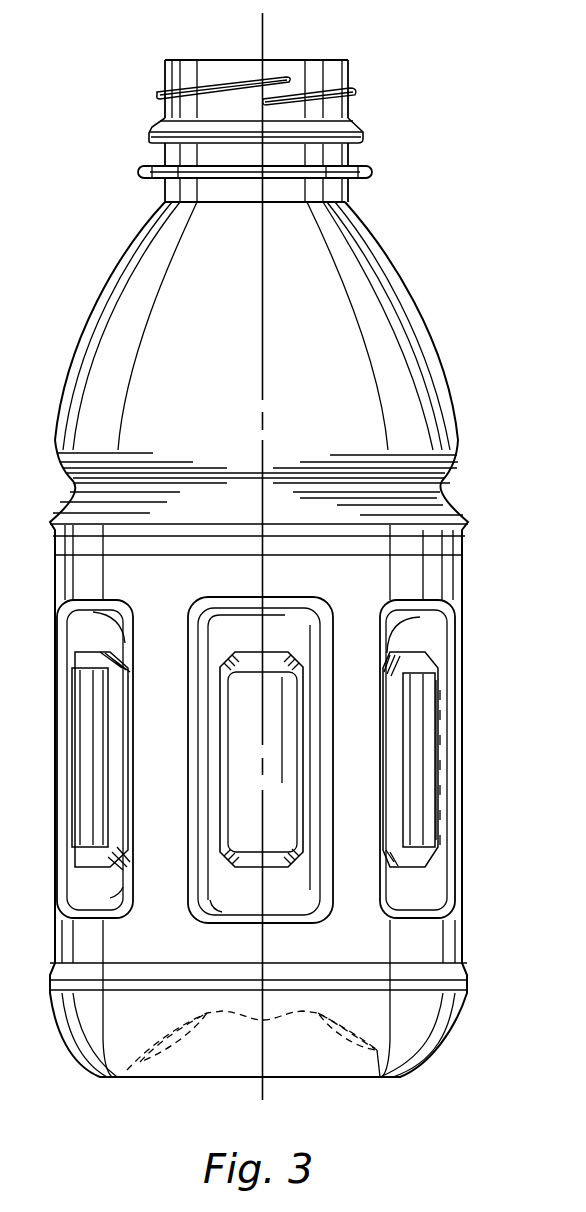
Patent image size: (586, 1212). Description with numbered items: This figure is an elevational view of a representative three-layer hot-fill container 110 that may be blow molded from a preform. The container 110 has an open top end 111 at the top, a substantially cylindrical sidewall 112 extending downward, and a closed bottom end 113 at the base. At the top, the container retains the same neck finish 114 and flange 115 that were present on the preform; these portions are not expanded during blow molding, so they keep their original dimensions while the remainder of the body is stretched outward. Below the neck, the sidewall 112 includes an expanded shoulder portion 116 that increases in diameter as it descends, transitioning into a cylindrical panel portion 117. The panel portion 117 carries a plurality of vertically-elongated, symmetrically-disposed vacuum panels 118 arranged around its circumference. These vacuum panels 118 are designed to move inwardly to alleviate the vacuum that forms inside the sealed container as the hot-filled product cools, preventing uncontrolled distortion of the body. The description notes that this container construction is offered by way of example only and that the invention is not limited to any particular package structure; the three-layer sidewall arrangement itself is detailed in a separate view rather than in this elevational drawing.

The container 110 is at (463, 264).
The open top end 111 is at (323, 62).
The sidewall 112 is at (460, 673).
The closed bottom end 113 is at (370, 1078).
The neck finish 114 is at (358, 92).
The flange 115 is at (372, 173).
The shoulder portion 116 is at (450, 393).
The panel portion 117 is at (458, 598).
The vacuum panels 118 is at (430, 890).